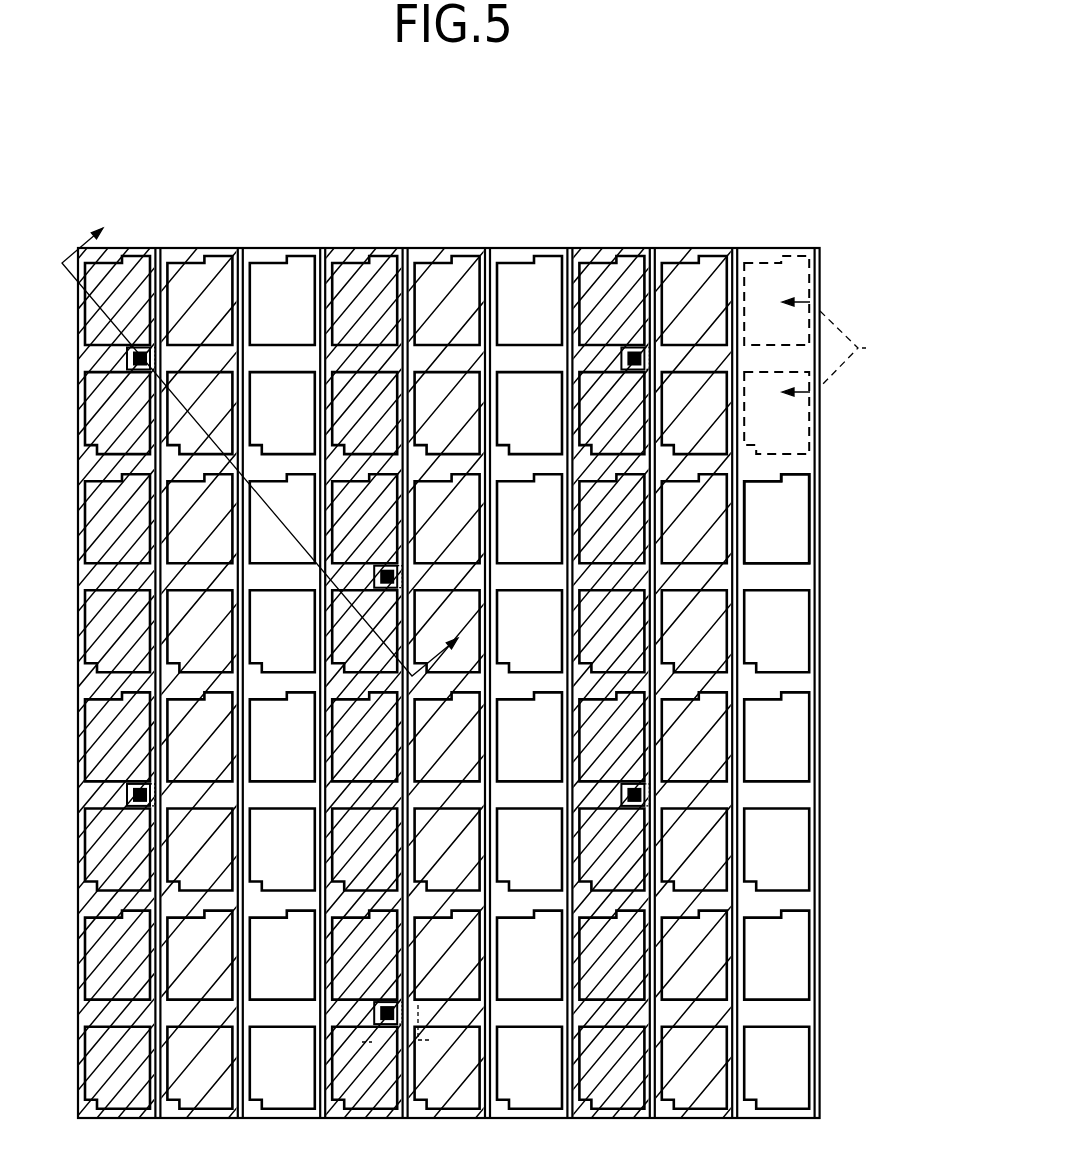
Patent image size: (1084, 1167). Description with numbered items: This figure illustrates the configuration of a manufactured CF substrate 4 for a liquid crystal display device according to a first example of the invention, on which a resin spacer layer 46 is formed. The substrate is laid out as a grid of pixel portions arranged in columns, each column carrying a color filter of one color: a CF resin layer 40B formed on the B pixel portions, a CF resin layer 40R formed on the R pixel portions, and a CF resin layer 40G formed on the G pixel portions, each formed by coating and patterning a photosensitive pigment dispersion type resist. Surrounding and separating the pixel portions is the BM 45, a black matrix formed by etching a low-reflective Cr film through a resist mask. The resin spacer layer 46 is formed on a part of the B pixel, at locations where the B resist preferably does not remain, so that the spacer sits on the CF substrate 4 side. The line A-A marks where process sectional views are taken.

The CF substrate 4 is at (862, 213).
The CF resin layer (B) 40B is at (113, 258).
The CF resin layer (R) 40R is at (186, 258).
The CF resin layer (G) 40G is at (264, 258).
The BM 45 is at (795, 580).
The resin spacer layer 46 is at (653, 800).